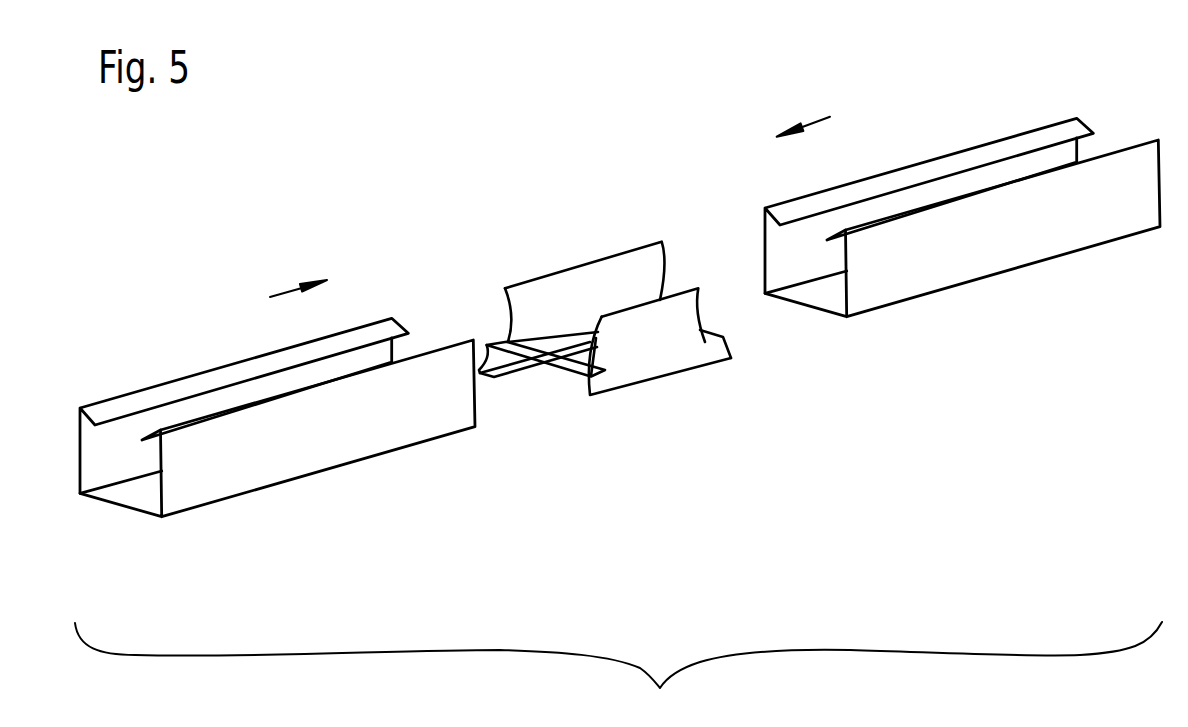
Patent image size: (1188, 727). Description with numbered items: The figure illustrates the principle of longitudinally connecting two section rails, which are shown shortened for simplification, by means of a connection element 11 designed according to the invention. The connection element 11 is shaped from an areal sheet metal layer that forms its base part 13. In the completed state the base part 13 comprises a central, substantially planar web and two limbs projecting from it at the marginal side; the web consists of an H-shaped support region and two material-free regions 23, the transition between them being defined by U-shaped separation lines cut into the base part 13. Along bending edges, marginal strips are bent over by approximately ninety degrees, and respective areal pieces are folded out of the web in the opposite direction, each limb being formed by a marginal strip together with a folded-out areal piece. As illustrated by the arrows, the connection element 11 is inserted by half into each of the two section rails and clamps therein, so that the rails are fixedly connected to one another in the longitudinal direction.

The connection element 11 is at (628, 313).
The base part 13 is at (562, 374).
The material-free regions 23 is at (596, 338).